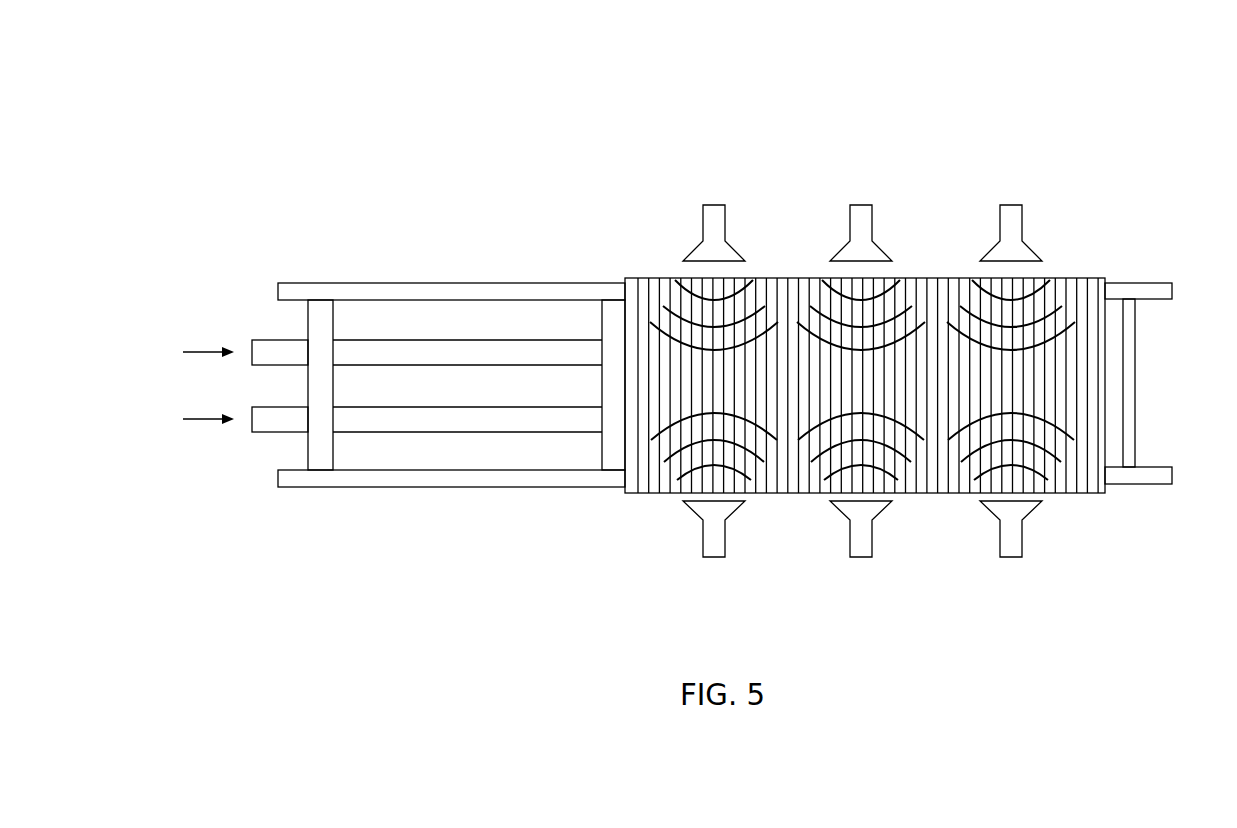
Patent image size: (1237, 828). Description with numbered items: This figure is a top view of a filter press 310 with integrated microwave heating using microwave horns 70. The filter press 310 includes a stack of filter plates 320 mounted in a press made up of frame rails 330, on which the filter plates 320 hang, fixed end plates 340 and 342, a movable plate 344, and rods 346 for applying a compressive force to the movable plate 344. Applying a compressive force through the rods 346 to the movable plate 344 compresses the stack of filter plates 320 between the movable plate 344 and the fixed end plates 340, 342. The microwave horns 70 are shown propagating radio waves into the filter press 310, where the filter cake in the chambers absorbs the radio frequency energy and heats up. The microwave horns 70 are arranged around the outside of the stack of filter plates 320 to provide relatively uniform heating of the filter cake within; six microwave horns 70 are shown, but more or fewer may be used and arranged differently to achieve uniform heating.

The filter press 310 is at (570, 148).
The microwave horns 70 is at (862, 233).
The filter plates 320 is at (647, 477).
The frame rails 330 is at (472, 287).
The fixed end plate 340 is at (318, 322).
The fixed end plate 342 is at (1123, 422).
The movable plate 344 is at (612, 330).
The rods 346 is at (287, 420).